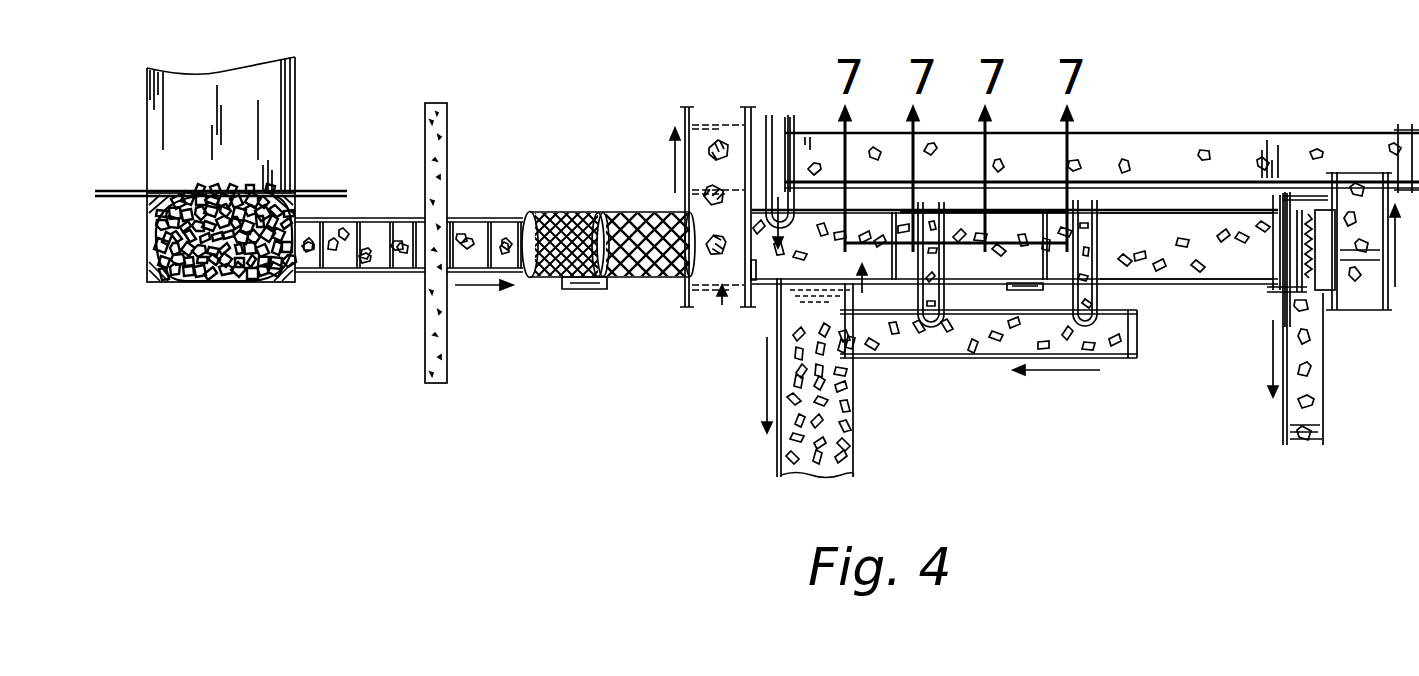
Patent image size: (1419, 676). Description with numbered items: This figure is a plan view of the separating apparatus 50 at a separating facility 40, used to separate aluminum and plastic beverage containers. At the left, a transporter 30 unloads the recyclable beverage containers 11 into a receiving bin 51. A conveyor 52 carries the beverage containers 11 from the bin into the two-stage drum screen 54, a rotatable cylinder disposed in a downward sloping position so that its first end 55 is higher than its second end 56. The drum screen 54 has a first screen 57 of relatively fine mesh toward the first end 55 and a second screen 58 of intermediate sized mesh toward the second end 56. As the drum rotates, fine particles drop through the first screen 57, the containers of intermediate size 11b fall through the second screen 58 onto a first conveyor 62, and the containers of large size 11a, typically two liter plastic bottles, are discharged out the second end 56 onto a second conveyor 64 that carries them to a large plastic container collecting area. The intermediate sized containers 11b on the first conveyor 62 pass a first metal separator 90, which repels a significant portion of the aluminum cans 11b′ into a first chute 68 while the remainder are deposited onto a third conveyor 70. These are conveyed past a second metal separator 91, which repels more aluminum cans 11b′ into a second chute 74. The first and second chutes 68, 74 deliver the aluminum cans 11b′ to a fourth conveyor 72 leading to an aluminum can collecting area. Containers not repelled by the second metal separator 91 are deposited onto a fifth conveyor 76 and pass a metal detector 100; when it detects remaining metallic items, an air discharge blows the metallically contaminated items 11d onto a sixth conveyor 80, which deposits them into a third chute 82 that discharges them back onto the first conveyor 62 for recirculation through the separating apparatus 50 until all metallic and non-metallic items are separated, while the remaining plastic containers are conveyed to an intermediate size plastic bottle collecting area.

The transporter 30 is at (268, 143).
The recyclable beverage containers 11 is at (172, 240).
The receiving bin 51 is at (162, 288).
The conveyor 52 is at (371, 278).
The separating facility 40 is at (383, 318).
The first end 55 is at (529, 211).
The first screen 57 is at (553, 280).
The second screen 58 is at (631, 279).
The two-stage drum screen 54 is at (590, 292).
The second end 56 is at (691, 228).
The second conveyor 64 is at (722, 306).
The containers of large size 11a is at (716, 166).
The third chute 82 is at (796, 113).
The sixth conveyor 80 is at (1272, 152).
The metallically contaminated items 11d is at (1353, 155).
The first metal separator 90 is at (886, 208).
The first chute 68 is at (931, 216).
The second metal separator 91 is at (1040, 208).
The third conveyor 70 is at (1008, 212).
The second chute 74 is at (1094, 218).
The fifth conveyor 76 is at (1216, 258).
The metal detector 100 is at (1270, 255).
The containers of intermediate size 11b is at (803, 260).
The aluminum cans 11b′ is at (790, 440).
The first conveyor 62 is at (862, 300).
The fourth conveyor 72 is at (972, 358).
The separating apparatus 50 is at (1162, 408).